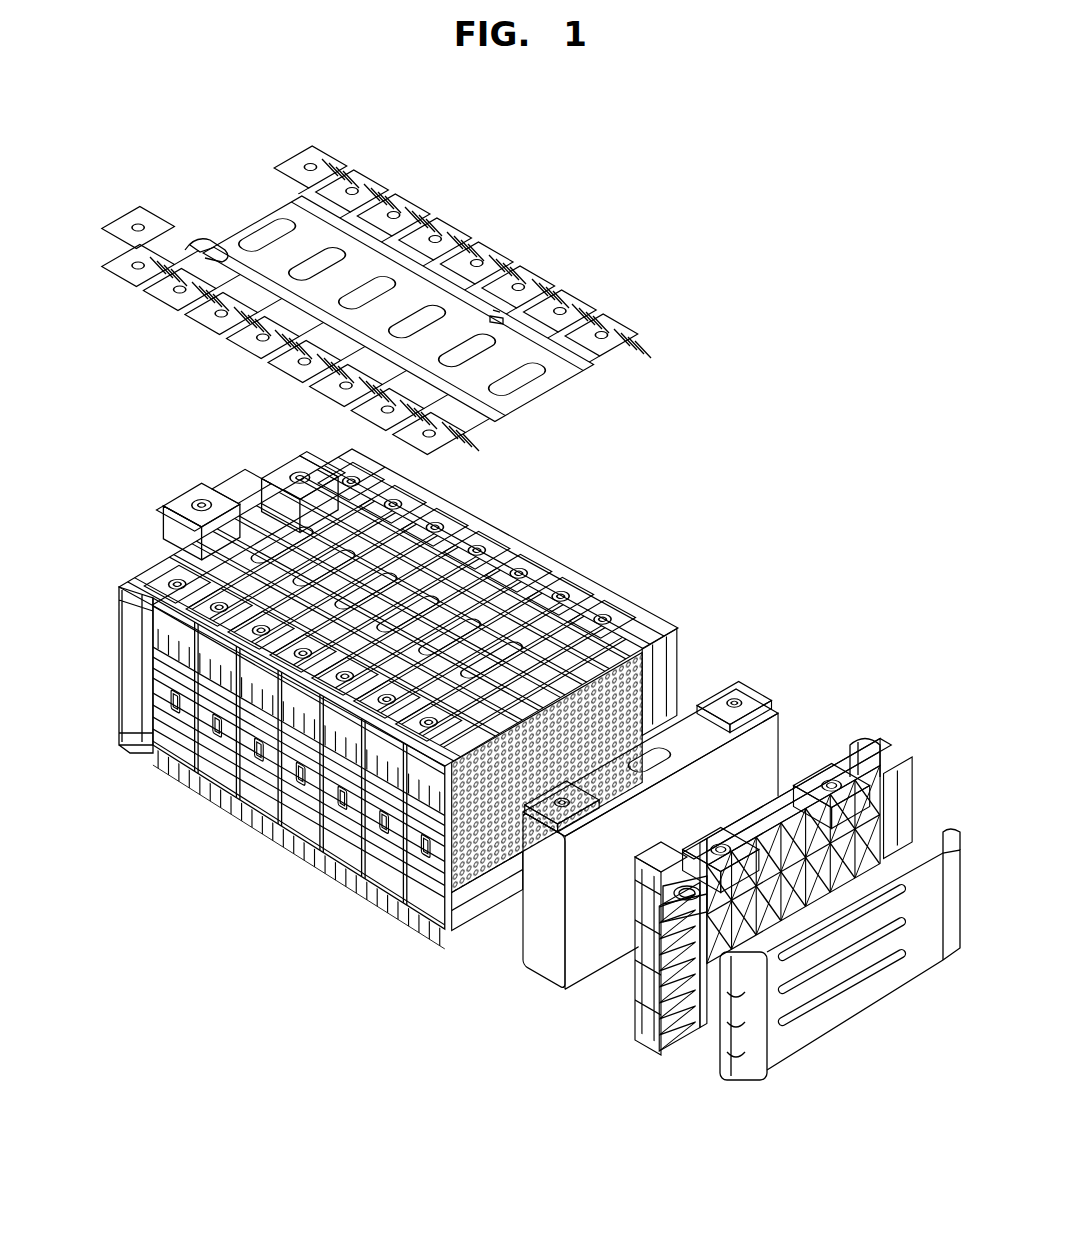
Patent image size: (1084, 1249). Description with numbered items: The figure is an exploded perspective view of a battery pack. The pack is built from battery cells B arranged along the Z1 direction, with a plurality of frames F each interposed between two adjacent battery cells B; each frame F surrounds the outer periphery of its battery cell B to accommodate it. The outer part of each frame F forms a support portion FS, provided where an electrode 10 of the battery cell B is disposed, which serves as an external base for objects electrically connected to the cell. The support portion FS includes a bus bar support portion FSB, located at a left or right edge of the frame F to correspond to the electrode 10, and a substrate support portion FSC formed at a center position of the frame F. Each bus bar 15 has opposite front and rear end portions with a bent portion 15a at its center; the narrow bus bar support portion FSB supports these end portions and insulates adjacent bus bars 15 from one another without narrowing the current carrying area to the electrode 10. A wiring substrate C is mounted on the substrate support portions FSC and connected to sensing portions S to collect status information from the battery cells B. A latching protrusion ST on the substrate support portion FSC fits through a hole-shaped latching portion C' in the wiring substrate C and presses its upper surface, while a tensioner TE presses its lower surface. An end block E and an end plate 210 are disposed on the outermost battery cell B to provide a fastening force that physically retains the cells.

The wiring substrate C is at (405, 325).
The latching portion C' is at (521, 263).
The sensing portion S is at (200, 252).
The bus bar 15 is at (567, 302).
The bent portion 15a is at (594, 306).
The frame F is at (610, 580).
The battery cell B is at (618, 613).
The electrode 10 is at (720, 707).
The tensioner TE is at (480, 560).
The latching protrusion ST is at (505, 550).
The support portion FS is at (222, 426).
The bus bar support portion FSB is at (188, 540).
The substrate support portion FSC is at (307, 528).
The end block E is at (890, 732).
The end plate 210 is at (120, 683).
The Z1 direction Z1 is at (268, 980).